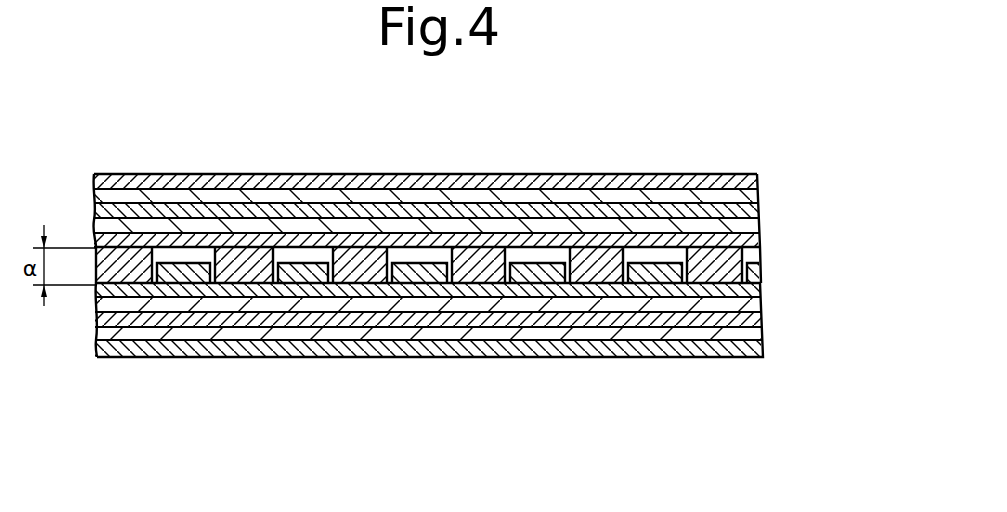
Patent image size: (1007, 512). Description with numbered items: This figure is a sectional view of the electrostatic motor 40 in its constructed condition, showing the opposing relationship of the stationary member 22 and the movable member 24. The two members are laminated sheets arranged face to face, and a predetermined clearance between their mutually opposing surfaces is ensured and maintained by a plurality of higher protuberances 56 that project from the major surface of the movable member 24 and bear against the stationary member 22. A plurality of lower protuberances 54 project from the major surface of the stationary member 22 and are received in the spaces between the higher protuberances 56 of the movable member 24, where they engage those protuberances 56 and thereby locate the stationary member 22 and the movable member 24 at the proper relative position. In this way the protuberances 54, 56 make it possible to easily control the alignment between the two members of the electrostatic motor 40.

The electrostatic motor 40 is at (485, 280).
The movable member 24 is at (783, 202).
The stationary member 22 is at (790, 317).
The protuberances 56 is at (598, 252).
The protuberances 54 is at (193, 275).